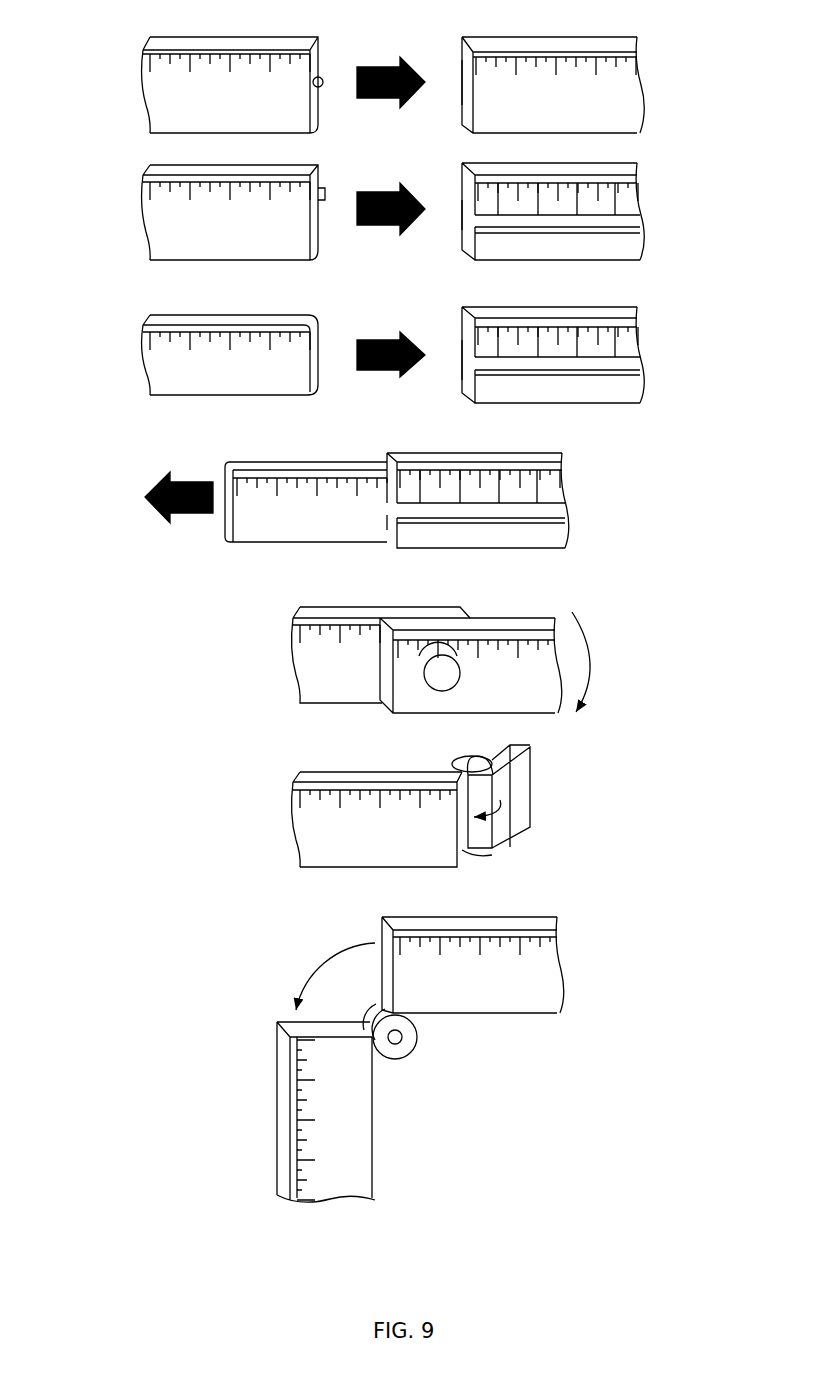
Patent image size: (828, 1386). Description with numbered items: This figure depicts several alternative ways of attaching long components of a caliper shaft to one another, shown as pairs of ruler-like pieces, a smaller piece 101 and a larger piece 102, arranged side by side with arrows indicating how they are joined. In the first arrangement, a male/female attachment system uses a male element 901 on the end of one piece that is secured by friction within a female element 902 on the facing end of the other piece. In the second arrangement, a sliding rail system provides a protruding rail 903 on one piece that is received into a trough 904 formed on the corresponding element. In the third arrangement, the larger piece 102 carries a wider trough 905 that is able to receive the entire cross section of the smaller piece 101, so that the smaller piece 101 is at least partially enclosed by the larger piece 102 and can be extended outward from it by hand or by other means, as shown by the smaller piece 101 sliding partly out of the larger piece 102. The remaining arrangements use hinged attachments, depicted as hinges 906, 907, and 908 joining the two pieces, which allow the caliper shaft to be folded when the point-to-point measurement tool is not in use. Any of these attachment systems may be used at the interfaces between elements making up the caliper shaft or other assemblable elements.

The smaller piece 101 is at (269, 619).
The larger piece 102 is at (507, 525).
The male element 901 is at (330, 76).
The female element 902 is at (467, 84).
The protruding rail 903 is at (324, 214).
The trough 904 is at (466, 224).
The wider trough 905 is at (466, 364).
The hinge 906 is at (428, 683).
The hinge 907 is at (487, 856).
The hinge 908 is at (412, 1052).